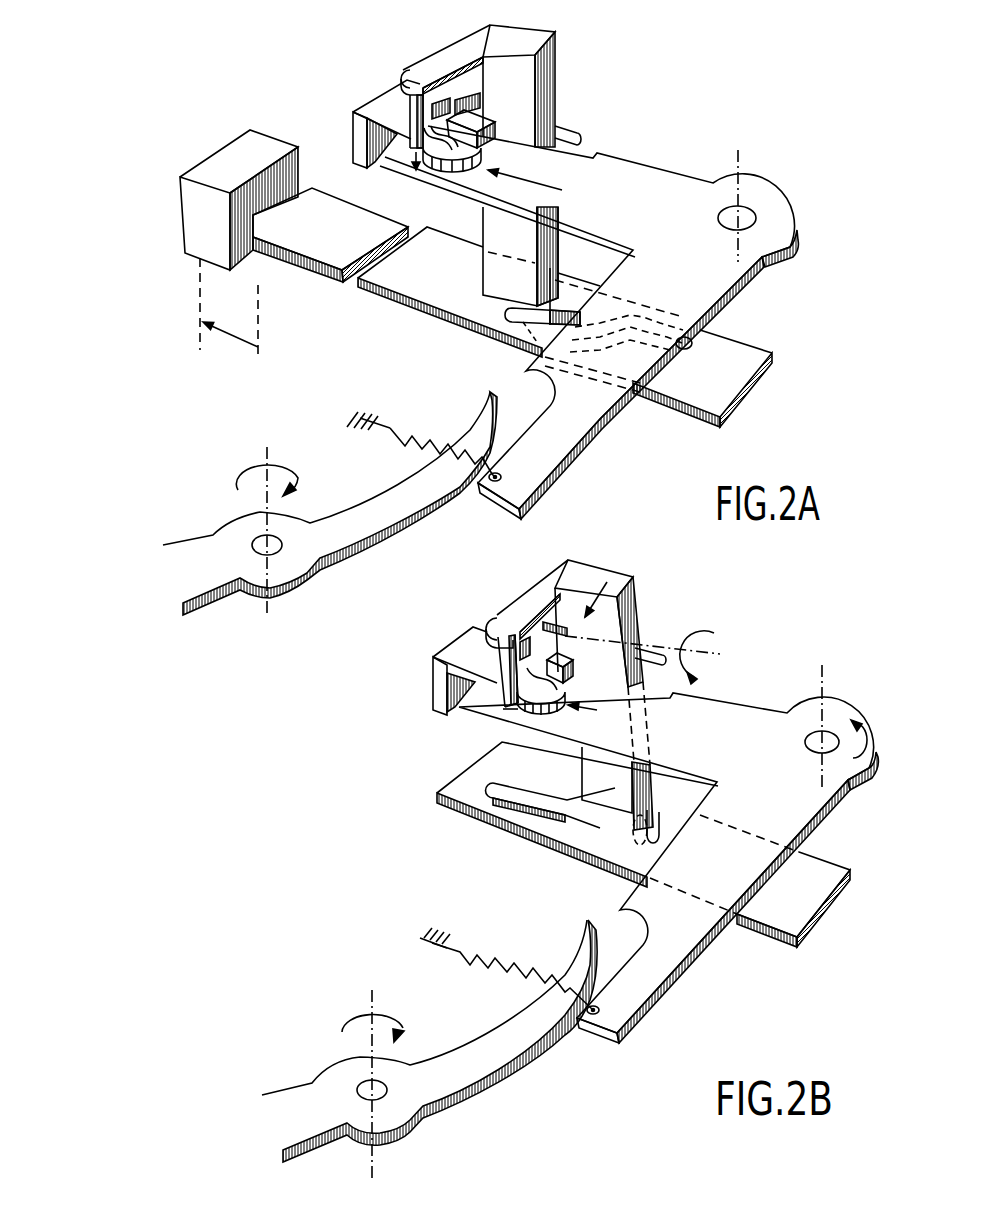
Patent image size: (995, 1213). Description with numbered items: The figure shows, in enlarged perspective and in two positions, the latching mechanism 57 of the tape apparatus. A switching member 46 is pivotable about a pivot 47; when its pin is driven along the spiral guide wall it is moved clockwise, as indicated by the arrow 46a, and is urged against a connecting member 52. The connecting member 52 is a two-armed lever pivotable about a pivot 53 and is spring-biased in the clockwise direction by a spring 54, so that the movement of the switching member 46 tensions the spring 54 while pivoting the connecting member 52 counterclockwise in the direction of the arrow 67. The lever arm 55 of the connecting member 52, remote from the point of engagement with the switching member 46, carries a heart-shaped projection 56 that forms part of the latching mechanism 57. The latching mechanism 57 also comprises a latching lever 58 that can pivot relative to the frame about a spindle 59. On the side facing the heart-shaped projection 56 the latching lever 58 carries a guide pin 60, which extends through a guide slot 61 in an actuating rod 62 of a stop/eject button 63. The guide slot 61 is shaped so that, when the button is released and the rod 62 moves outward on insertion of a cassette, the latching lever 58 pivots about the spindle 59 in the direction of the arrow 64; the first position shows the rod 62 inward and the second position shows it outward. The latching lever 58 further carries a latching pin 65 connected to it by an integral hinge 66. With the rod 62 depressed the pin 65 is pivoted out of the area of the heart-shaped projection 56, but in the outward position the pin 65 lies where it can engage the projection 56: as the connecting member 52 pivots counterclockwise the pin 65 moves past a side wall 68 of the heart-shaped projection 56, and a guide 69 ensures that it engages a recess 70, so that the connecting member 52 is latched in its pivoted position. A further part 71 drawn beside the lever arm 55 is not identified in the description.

In FIG. 2A, the switching member 46 is at (373, 532).
In FIG. 2B, the switching member 46 is at (483, 1067).
In FIG. 2A, the arrow 46a is at (288, 465).
In FIG. 2B, the arrow 46a is at (404, 1018).
In FIG. 2A, the pivot 47 is at (269, 626).
In FIG. 2B, the pivot 47 is at (375, 1165).
In FIG. 2A, the connecting member 52 is at (540, 463).
In FIG. 2B, the connecting member 52 is at (667, 960).
In FIG. 2A, the pivot 53 is at (742, 172).
In FIG. 2B, the pivot 53 is at (822, 670).
In FIG. 2A, the spring 54 is at (407, 447).
In FIG. 2B, the spring 54 is at (508, 995).
In FIG. 2A, the lever arm 55 is at (378, 103).
In FIG. 2B, the lever arm 55 is at (457, 655).
In FIG. 2A, the heart-shaped projection 56 is at (430, 150).
In FIG. 2B, the heart-shaped projection 56 is at (548, 697).
In FIG. 2A, the latching mechanism 57 is at (539, 184).
In FIG. 2B, the latching mechanism 57 is at (596, 709).
In FIG. 2A, the latching lever 58 is at (548, 67).
In FIG. 2B, the latching lever 58 is at (633, 593).
In FIG. 2A, the spindle 59 is at (567, 131).
In FIG. 2B, the spindle 59 is at (657, 643).
In FIG. 2A, the guide pin 60 is at (557, 307).
In FIG. 2B, the guide pin 60 is at (662, 840).
In FIG. 2A, the guide slot 61 is at (690, 353).
In FIG. 2B, the guide slot 61 is at (533, 805).
In FIG. 2A, the actuating rod 62 is at (441, 297).
In FIG. 2B, the actuating rod 62 is at (817, 870).
In FIG. 2A, the stop/eject button 63 is at (259, 147).
In FIG. 2B, the arrow 64 is at (698, 645).
In FIG. 2A, the latching pin 65 is at (402, 87).
In FIG. 2B, the latching pin 65 is at (478, 633).
In FIG. 2A, the integral hinge 66 is at (470, 44).
In FIG. 2B, the integral hinge 66 is at (553, 583).
In FIG. 2B, the arrow 67 is at (861, 718).
In FIG. 2B, the side wall 68 is at (517, 712).
In FIG. 2A, the guide 69 is at (483, 127).
In FIG. 2B, the guide 69 is at (563, 660).
In FIG. 2B, the recess 70 is at (545, 636).
In FIG. 2A, the front wall of base block 71 is at (352, 137).
In FIG. 2B, the front wall of base block 71 is at (443, 688).